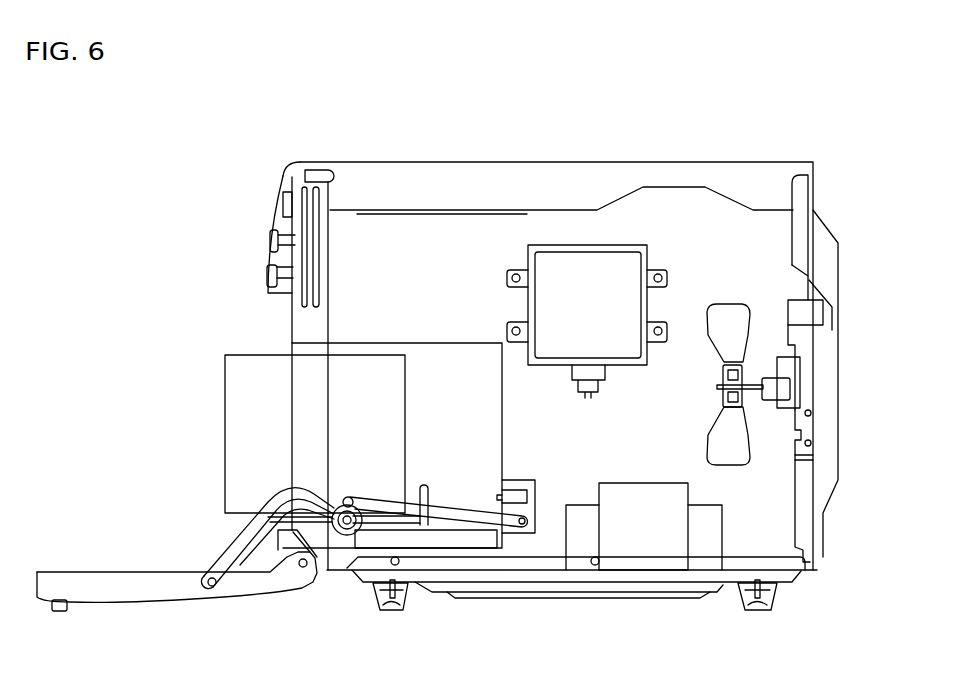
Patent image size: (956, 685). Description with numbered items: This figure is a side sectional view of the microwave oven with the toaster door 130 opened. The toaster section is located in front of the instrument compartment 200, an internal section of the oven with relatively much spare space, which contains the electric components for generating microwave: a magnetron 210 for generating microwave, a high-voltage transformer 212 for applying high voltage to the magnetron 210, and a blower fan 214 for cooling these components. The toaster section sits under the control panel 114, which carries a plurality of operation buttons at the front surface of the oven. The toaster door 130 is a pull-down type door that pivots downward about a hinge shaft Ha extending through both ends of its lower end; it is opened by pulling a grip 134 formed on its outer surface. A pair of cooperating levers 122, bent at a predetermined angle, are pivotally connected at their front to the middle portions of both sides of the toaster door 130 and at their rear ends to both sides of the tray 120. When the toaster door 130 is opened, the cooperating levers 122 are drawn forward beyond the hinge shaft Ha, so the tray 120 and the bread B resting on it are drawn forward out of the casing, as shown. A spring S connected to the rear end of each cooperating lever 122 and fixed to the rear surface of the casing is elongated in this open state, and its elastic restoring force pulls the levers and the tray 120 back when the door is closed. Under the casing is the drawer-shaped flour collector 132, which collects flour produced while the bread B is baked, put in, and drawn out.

The instrument compartment 200 is at (421, 263).
The control panel 114 is at (255, 241).
The magnetron 210 is at (580, 272).
The blower fan 214 is at (732, 330).
The high-voltage transformer 212 is at (658, 517).
The bread B is at (240, 398).
The cooperating levers 122 is at (252, 496).
The toaster door 130 is at (96, 563).
The grip 134 is at (56, 612).
The hinge shaft Ha is at (303, 568).
The flour collector 132 is at (347, 542).
The tray 120 is at (430, 475).
The spring S is at (448, 515).